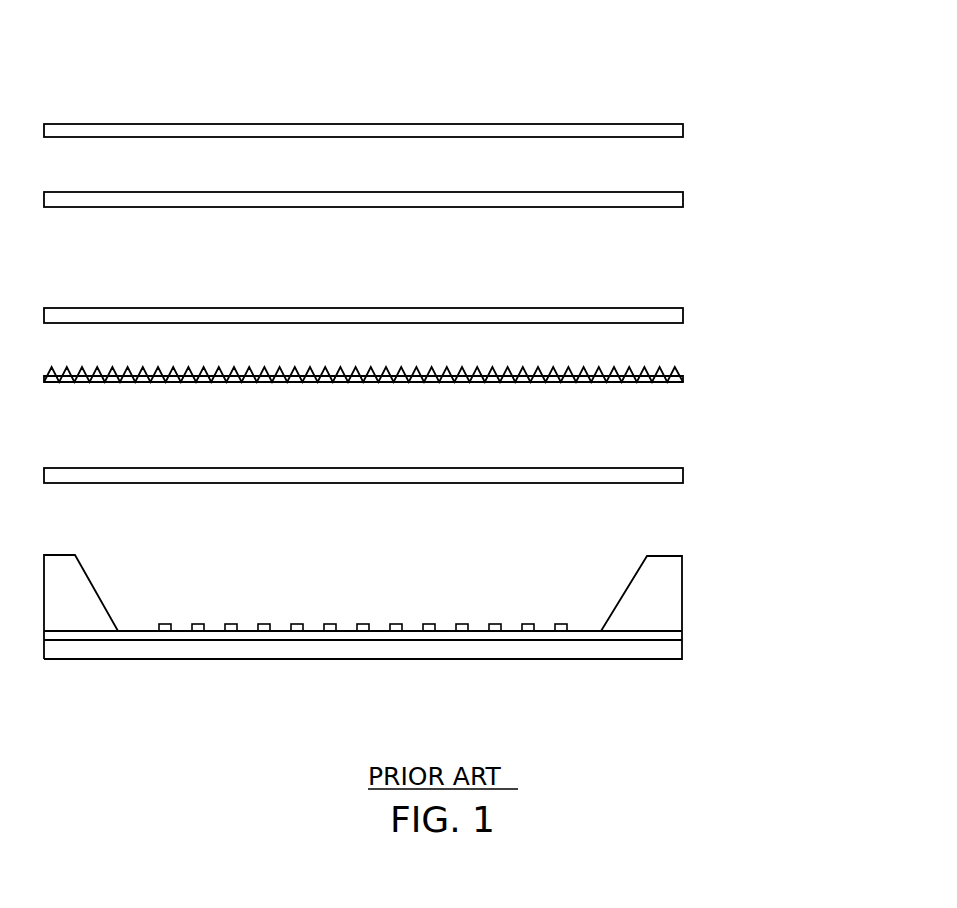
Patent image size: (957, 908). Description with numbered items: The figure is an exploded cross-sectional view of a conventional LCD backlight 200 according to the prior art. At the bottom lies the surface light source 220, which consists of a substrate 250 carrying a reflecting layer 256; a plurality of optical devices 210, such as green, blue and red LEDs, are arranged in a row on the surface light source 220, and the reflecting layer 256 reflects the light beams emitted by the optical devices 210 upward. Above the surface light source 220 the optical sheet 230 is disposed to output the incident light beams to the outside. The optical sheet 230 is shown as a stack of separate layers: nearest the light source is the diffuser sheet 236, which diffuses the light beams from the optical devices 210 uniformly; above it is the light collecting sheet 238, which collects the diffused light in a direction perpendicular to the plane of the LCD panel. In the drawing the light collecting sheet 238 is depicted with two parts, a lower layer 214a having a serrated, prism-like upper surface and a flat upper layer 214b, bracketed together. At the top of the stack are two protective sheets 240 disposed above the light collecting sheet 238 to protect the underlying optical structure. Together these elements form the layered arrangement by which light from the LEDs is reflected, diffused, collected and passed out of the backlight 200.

The LCD backlight 200 is at (537, 100).
The optical sheet 230 is at (845, 115).
The protective sheet 240 is at (684, 130).
The light collecting sheet 238 is at (774, 302).
The prism sheet upper layer 214b is at (684, 316).
The prism sheet lower layer 214a is at (684, 378).
The diffuser sheet 236 is at (684, 472).
The surface light source 220 is at (394, 653).
The optical devices 210 is at (298, 623).
The reflecting layer 256 is at (684, 633).
The substrate 250 is at (684, 650).